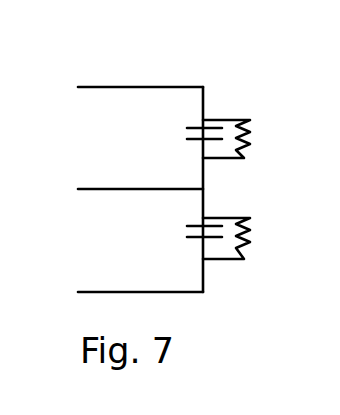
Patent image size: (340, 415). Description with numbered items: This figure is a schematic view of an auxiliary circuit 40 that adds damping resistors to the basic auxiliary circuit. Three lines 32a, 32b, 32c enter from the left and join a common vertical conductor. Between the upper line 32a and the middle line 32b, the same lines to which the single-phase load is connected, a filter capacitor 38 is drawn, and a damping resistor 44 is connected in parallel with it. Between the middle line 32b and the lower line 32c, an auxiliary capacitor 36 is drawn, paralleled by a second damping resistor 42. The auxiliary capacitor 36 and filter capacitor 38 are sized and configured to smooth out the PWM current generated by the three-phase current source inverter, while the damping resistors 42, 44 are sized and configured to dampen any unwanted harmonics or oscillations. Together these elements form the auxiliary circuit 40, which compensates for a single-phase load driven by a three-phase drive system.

The auxiliary circuit 40 is at (166, 56).
The line 32a is at (103, 86).
The line 32b is at (100, 188).
The line 32c is at (110, 291).
The auxiliary capacitor 36 is at (190, 237).
The filter capacitor 38 is at (197, 125).
The damping resistor 42 is at (252, 240).
The damping resistor 44 is at (252, 131).